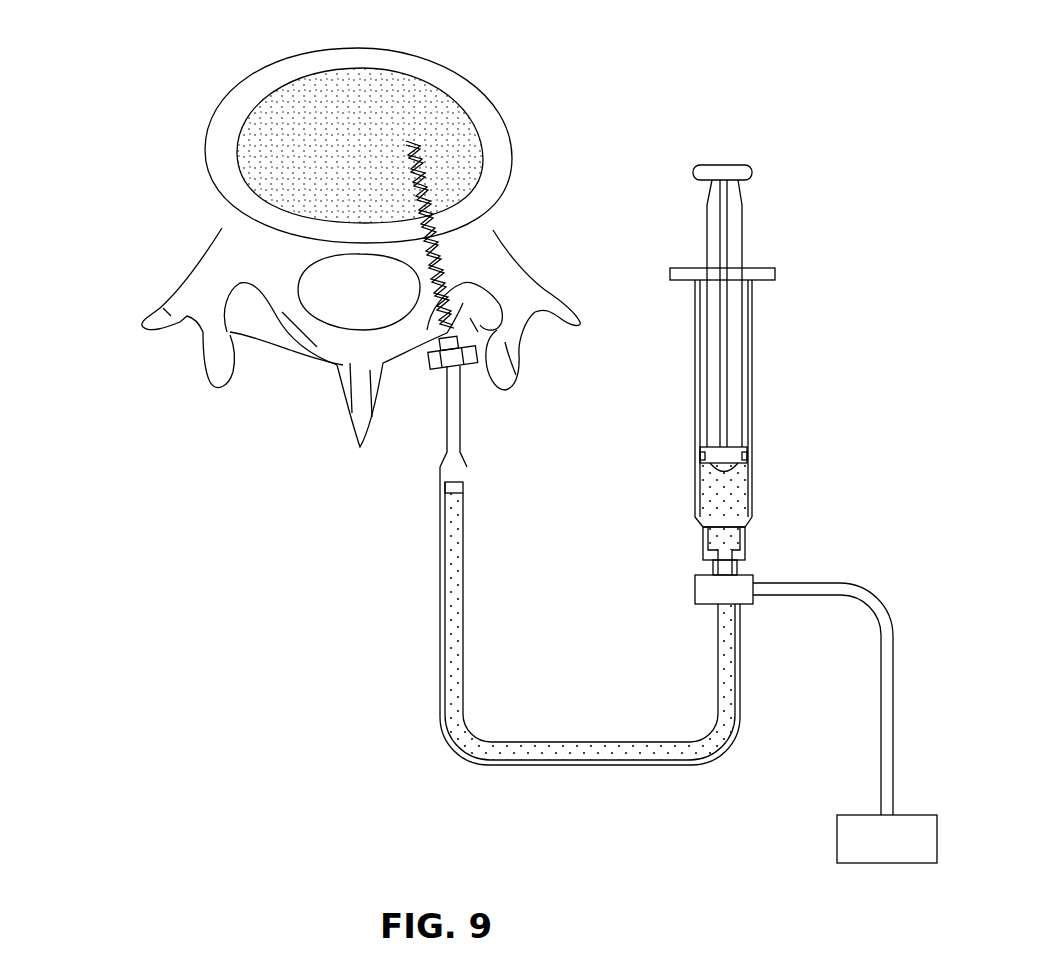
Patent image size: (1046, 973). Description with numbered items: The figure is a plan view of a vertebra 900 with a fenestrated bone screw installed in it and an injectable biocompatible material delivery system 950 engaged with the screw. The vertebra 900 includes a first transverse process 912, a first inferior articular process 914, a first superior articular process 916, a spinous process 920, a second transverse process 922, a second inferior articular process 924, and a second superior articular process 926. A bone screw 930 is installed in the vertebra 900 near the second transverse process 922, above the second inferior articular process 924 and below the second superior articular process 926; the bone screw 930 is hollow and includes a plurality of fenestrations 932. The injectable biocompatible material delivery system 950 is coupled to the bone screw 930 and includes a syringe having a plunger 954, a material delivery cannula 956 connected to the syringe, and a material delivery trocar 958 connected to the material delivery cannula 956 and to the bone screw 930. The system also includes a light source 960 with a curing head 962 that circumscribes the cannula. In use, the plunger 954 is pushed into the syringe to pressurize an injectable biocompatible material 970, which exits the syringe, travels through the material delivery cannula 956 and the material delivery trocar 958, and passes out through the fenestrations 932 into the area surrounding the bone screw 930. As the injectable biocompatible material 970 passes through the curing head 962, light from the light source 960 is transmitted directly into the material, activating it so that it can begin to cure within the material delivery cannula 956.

The vertebra 900 is at (236, 92).
The first transverse process 912 is at (168, 290).
The first inferior articular process 914 is at (210, 383).
The first superior articular process 916 is at (240, 312).
The spinous process 920 is at (360, 423).
The second transverse process 922 is at (548, 300).
The second inferior articular process 924 is at (510, 347).
The second superior articular process 926 is at (485, 323).
The bone screw 930 is at (420, 170).
The fenestrations 932 is at (440, 280).
The injectable biocompatible material delivery system 950 is at (753, 273).
The plunger 954 is at (727, 172).
The material delivery cannula 956 is at (562, 757).
The material delivery trocar 958 is at (445, 472).
The light source 960 is at (845, 838).
The curing head 962 is at (705, 587).
The injectable biocompatible material 970 is at (730, 497).